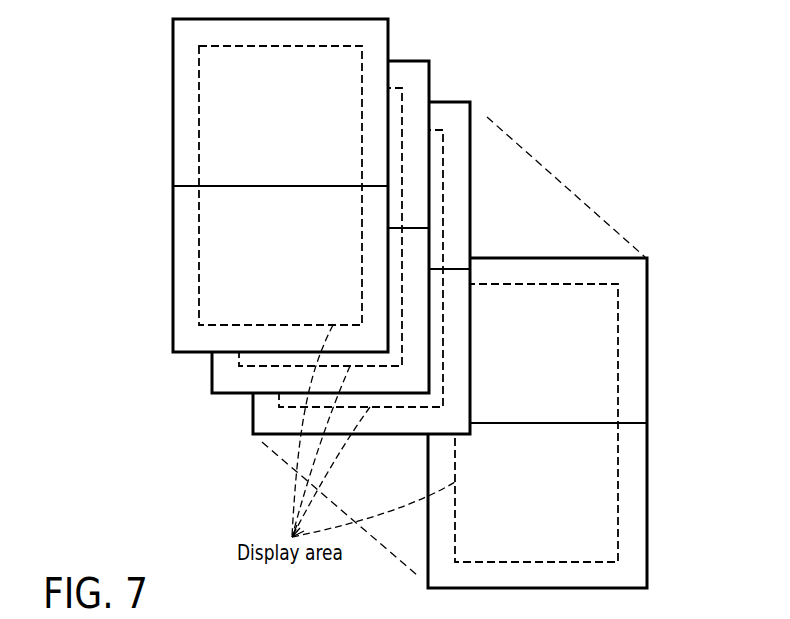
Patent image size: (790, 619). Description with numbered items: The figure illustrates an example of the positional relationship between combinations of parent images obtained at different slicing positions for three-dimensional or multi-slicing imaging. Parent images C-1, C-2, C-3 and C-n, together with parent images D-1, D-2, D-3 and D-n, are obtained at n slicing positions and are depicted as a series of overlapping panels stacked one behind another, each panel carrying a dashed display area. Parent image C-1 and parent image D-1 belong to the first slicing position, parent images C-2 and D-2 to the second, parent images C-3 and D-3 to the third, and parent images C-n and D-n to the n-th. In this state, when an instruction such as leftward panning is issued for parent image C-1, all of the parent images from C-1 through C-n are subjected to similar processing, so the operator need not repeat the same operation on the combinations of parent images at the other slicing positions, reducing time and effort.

The parent image C-1 is at (388, 22).
The parent image C-2 is at (429, 75).
The parent image C-3 is at (470, 108).
The parent image C-n is at (647, 283).
The parent image D-1 is at (173, 325).
The parent image D-2 is at (212, 372).
The parent image D-3 is at (253, 418).
The parent image D-n is at (647, 460).